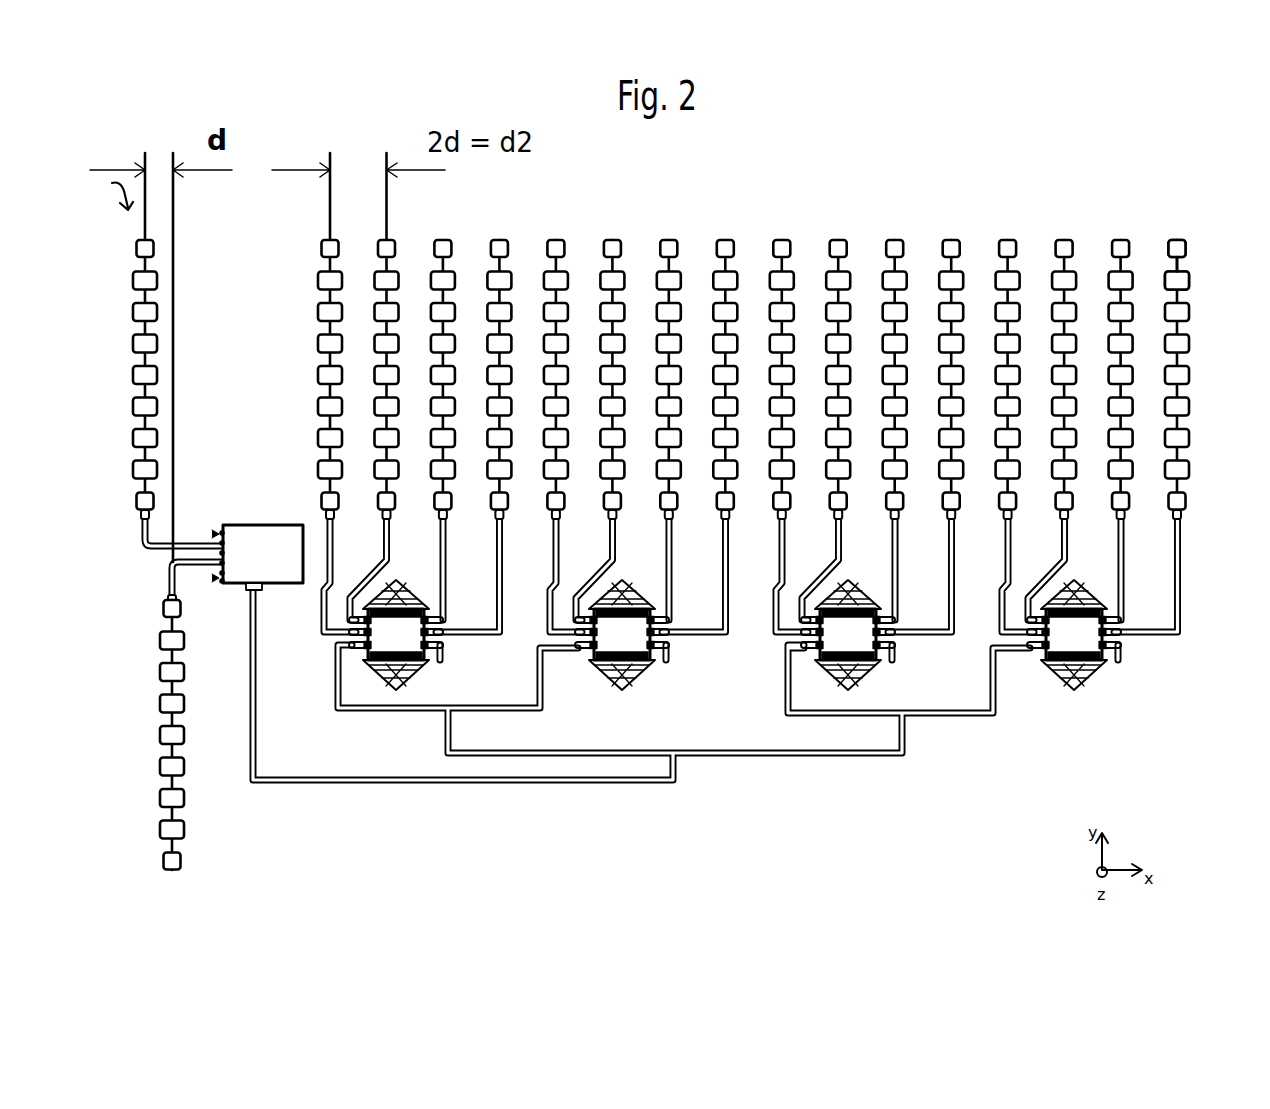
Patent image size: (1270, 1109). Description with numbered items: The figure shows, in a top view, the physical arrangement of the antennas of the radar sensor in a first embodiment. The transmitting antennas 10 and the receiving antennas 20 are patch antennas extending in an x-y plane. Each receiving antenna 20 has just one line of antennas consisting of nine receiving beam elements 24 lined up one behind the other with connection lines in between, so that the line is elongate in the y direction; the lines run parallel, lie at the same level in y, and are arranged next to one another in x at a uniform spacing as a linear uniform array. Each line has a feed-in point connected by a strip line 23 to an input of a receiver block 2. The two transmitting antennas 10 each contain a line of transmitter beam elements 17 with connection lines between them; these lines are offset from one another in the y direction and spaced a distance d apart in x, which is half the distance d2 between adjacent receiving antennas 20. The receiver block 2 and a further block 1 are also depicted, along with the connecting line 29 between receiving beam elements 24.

The control unit 1 is at (258, 540).
The receiver block 2 is at (428, 660).
The transmitting antenna 10 is at (173, 905).
The transmitter beam element 17 is at (184, 829).
The receiving antenna 20 is at (1072, 213).
The strip line 23 is at (333, 548).
The receiving beam element 24 is at (1186, 252).
The connecting conductor 29 is at (1180, 268).